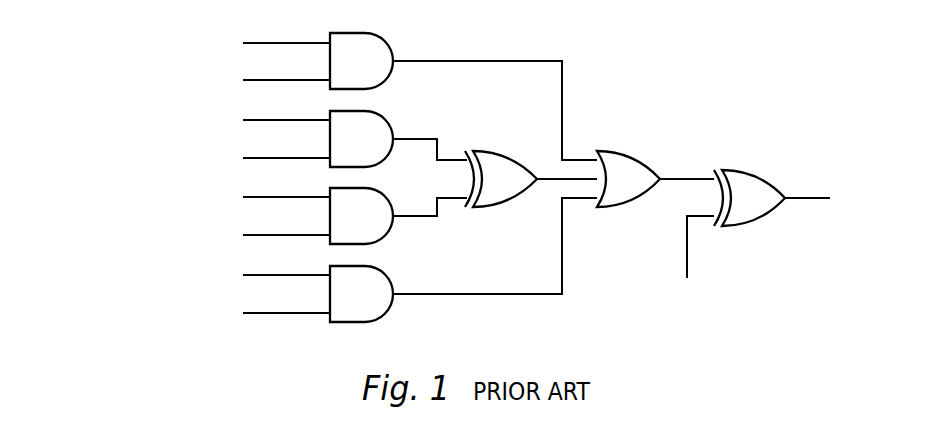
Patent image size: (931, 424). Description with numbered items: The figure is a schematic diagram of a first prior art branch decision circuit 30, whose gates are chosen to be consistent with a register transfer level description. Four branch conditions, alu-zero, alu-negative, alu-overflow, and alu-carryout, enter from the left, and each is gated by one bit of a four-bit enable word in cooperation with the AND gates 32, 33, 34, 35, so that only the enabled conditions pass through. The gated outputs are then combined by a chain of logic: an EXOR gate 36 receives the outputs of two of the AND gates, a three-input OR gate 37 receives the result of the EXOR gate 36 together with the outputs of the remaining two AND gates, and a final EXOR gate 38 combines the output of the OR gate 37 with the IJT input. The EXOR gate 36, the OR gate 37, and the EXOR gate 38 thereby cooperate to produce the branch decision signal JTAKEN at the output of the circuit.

The first prior art branch decision circuit 30 is at (84, 246).
The AND gate 32 is at (375, 76).
The AND gate 33 is at (375, 154).
The AND gate 34 is at (375, 231).
The AND gate 35 is at (375, 310).
The EXOR gate 36 is at (491, 152).
The 3 input OR gate 37 is at (629, 155).
The EXOR gate 38 is at (745, 173).